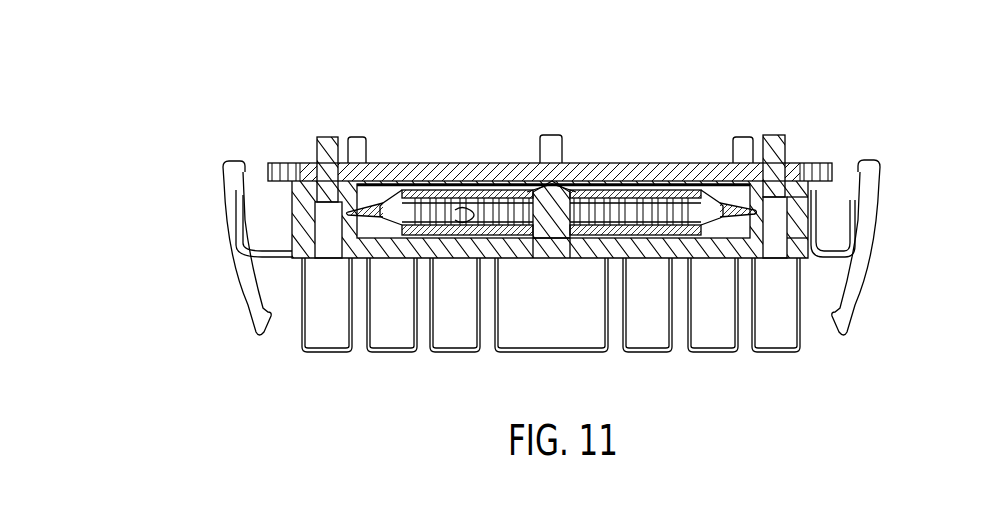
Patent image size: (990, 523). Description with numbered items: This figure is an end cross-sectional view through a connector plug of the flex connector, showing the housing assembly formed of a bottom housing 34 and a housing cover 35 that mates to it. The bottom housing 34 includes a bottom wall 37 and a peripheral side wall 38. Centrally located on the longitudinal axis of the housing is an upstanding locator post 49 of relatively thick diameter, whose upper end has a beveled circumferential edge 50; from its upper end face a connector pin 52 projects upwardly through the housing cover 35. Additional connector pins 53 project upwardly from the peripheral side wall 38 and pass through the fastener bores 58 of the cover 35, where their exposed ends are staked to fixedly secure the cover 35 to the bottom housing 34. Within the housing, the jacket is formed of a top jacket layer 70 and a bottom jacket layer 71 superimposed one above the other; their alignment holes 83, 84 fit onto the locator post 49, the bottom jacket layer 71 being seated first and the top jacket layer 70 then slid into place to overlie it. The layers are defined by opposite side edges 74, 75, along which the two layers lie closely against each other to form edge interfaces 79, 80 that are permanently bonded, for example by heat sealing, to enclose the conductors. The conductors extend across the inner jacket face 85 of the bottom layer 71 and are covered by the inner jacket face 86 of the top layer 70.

The bottom housing 34 is at (808, 235).
The housing cover 35 is at (672, 163).
The bottom wall 37 is at (660, 247).
The peripheral side wall 38 is at (798, 199).
The locator post 49 is at (560, 190).
The beveled circumferential edge 50 is at (458, 215).
The connector pin 52 is at (548, 135).
The connector pins 53 is at (322, 139).
The fastener bores 58 is at (302, 170).
The top jacket layer 70 is at (448, 200).
The bottom jacket layer 71 is at (445, 212).
The side edge 74 is at (348, 208).
The side edge 75 is at (792, 220).
The edge interface 79 is at (402, 205).
The edge interface 80 is at (698, 215).
The alignment holes 83 is at (552, 200).
The alignment holes 84 is at (546, 200).
The inner jacket face 85 is at (470, 218).
The inner jacket face 86 is at (447, 210).